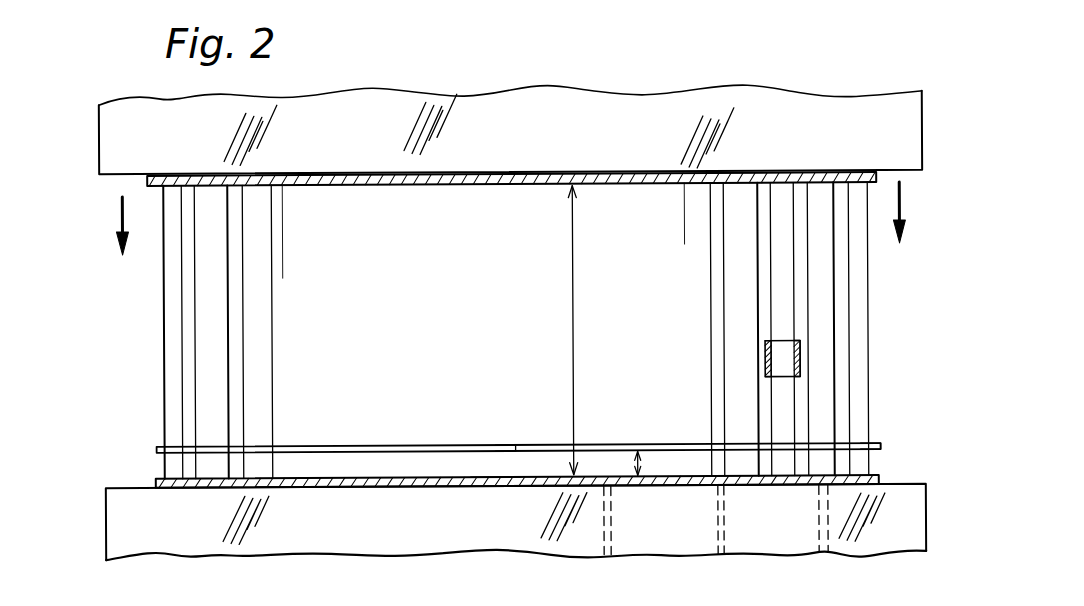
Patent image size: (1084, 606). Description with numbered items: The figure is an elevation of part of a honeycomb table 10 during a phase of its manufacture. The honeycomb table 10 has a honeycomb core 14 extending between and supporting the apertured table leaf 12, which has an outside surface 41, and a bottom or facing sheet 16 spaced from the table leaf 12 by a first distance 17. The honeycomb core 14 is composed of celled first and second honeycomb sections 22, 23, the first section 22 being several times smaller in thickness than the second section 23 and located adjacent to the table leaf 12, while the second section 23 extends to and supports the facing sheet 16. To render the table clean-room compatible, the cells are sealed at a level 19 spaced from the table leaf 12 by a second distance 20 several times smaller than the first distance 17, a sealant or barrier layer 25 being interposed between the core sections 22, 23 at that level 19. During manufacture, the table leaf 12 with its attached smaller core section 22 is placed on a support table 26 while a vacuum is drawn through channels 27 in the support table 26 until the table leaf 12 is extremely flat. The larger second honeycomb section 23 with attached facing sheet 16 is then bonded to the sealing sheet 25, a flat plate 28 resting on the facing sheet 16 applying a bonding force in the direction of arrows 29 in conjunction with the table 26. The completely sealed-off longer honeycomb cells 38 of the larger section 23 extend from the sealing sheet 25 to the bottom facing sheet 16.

The honeycomb table 10 is at (163, 323).
The table leaf 12 is at (364, 487).
The honeycomb core 14 is at (818, 323).
The facing sheet 16 is at (500, 173).
The first distance 17 is at (572, 328).
The level 19 is at (506, 452).
The second distance 20 is at (640, 457).
The first honeycomb section 22 is at (868, 463).
The second honeycomb section 23 is at (864, 362).
The sealant or barrier layer 25 is at (418, 444).
The support table 26 is at (174, 541).
The channels 27 is at (717, 507).
The flat plate 28 is at (130, 103).
The arrows 29 is at (122, 224).
The sealed-off honeycomb cells 38 is at (784, 357).
The outside surface 41 is at (496, 487).